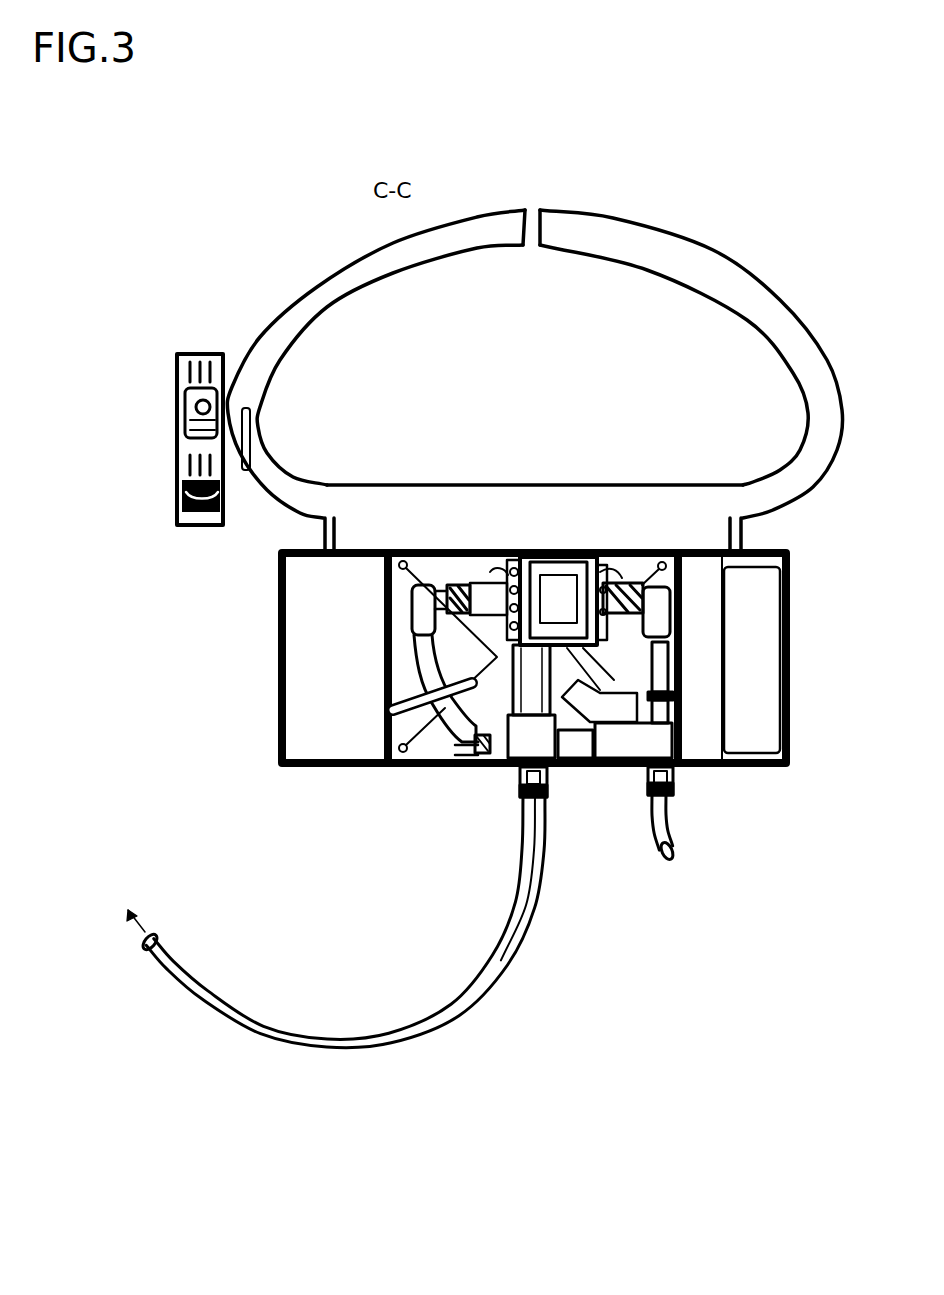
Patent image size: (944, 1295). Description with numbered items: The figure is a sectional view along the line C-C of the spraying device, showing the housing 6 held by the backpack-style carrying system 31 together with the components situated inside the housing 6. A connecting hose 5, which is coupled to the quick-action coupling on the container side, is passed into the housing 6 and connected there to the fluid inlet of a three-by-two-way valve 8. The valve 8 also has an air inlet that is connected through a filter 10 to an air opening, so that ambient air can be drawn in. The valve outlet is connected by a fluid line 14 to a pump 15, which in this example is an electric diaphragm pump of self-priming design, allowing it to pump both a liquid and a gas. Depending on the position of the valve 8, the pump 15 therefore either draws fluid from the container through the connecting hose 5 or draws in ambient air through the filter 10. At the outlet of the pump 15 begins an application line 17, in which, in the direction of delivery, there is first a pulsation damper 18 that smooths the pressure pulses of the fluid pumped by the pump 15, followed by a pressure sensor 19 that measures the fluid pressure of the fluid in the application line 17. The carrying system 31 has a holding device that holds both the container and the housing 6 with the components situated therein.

The carrying system 31 is at (693, 268).
The housing 6 is at (698, 714).
The fluid line 14 is at (664, 655).
The pump 15 is at (548, 608).
The pressure sensor 19 is at (536, 738).
The filter 10 is at (573, 742).
The 3/2-way valve 8 is at (625, 742).
The application line 17 is at (420, 647).
The pulsation damper 18 is at (412, 717).
The connecting hose 5 is at (673, 862).